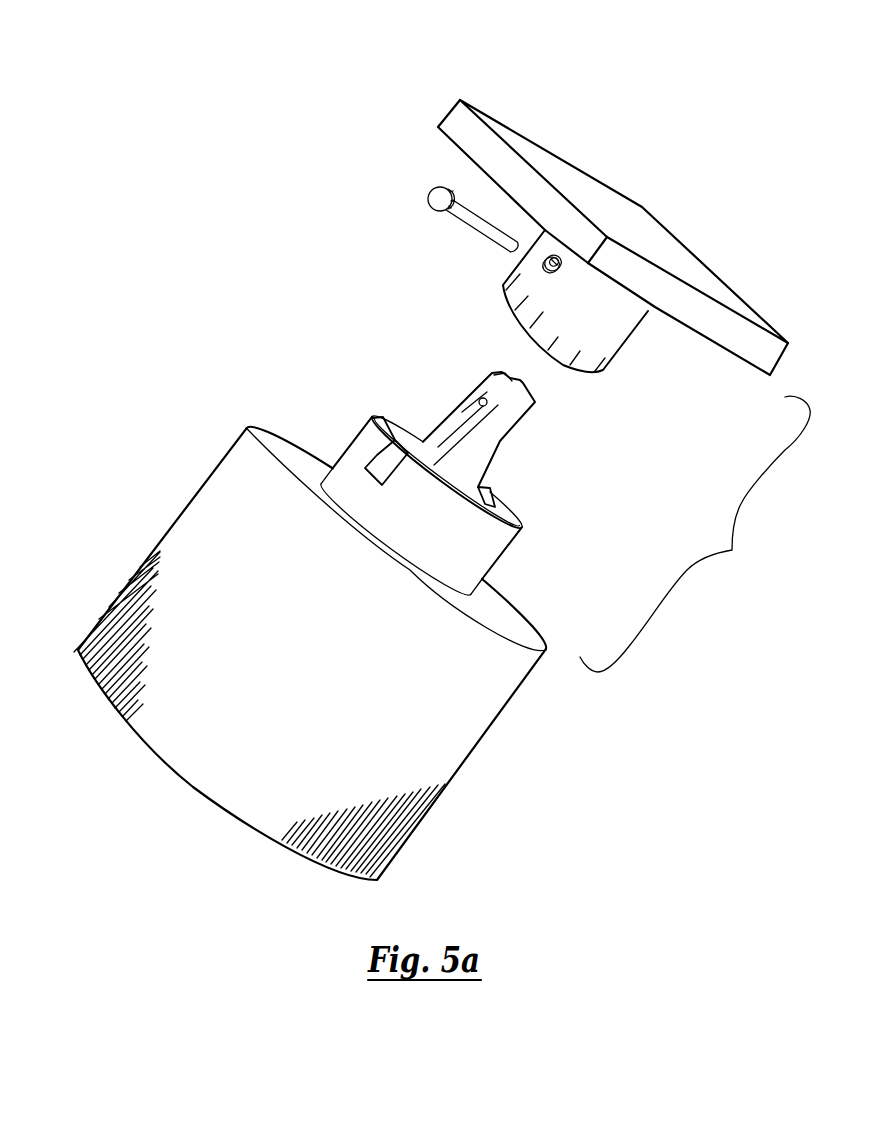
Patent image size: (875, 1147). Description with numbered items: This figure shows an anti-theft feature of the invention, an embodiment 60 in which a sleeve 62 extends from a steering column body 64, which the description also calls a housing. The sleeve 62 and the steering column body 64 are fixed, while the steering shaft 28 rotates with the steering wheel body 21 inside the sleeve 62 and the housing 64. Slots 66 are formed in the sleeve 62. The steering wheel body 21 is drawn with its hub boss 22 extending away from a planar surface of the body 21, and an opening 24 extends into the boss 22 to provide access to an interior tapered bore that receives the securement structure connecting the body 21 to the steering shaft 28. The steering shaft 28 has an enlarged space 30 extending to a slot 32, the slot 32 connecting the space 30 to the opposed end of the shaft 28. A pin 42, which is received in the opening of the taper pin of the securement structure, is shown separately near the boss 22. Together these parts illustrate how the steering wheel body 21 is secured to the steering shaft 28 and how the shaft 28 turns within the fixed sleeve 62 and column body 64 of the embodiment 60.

The body 21 is at (638, 358).
The hub boss 22 is at (498, 278).
The opening 24 is at (544, 261).
The pin 42 is at (427, 198).
The steering column body 64 is at (483, 750).
The sleeve 62 is at (503, 556).
The slots 66 is at (370, 458).
The steering shaft 28 is at (440, 442).
The enlarged space 30 is at (479, 402).
The slot 32 is at (494, 374).
The embodiment 60 is at (695, 534).